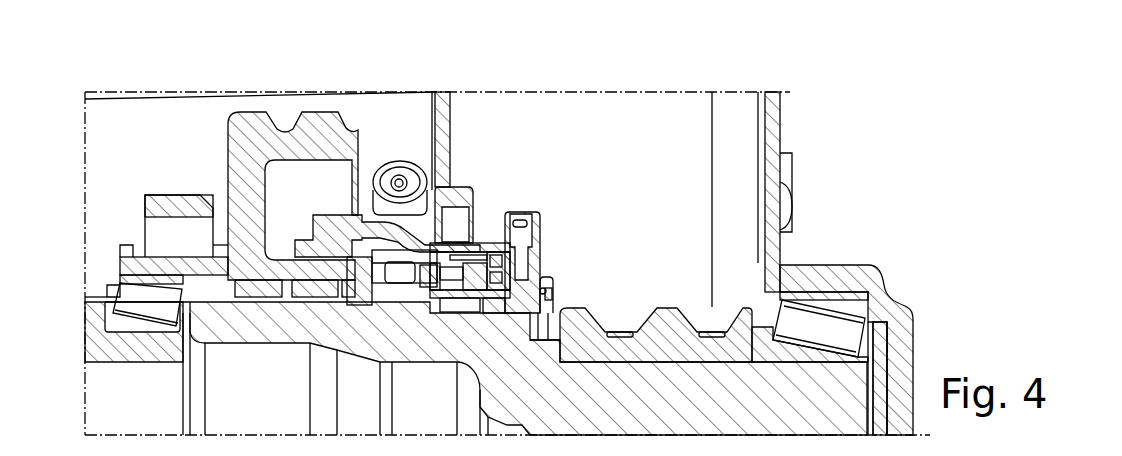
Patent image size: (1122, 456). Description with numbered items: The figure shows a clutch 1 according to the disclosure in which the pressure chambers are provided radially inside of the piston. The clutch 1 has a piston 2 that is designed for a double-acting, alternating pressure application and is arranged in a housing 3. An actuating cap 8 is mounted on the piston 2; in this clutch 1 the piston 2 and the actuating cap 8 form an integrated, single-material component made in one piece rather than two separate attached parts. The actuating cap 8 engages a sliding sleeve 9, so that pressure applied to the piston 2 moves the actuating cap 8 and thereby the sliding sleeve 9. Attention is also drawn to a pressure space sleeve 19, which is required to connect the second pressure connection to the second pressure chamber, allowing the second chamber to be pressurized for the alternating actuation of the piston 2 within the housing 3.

The clutch 1 is at (551, 96).
The piston 2 is at (452, 188).
The housing 3 is at (538, 279).
The actuating cap 8 is at (316, 214).
The sliding sleeve 9 is at (298, 243).
The pressure space sleeve 19 is at (553, 298).